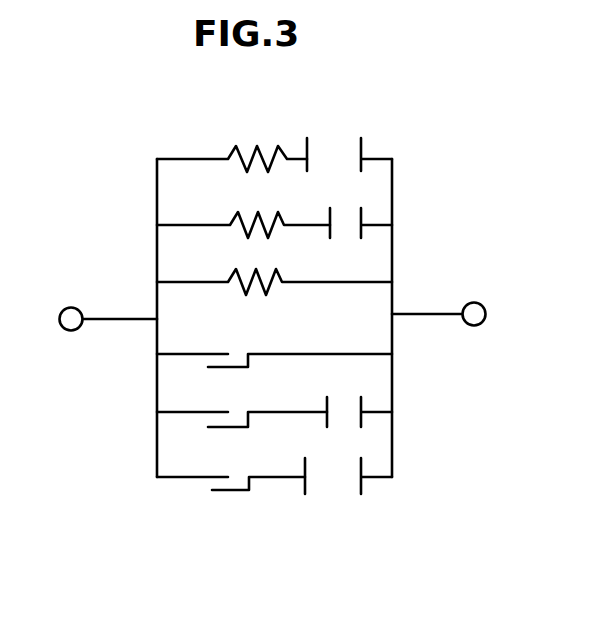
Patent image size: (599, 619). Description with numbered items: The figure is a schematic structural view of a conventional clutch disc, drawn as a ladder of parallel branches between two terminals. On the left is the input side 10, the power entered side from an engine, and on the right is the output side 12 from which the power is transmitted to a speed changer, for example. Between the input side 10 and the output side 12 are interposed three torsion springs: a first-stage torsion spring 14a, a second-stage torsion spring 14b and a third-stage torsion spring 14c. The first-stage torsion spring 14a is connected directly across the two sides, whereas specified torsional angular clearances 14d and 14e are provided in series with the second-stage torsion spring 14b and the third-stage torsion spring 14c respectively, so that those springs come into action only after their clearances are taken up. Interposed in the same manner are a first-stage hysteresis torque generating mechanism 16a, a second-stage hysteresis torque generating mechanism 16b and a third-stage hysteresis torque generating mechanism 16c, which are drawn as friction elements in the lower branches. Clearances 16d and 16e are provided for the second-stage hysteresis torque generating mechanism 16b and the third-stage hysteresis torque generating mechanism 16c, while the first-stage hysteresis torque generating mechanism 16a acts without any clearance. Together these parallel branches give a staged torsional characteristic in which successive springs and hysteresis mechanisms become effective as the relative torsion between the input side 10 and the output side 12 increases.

The input side 10 is at (105, 321).
The output side 12 is at (441, 312).
The first-stage torsion spring 14a is at (266, 290).
The second-stage torsion spring 14b is at (234, 221).
The third-stage torsion spring 14c is at (237, 151).
The torsional angular clearance 14d is at (343, 228).
The torsional angular clearance 14e is at (329, 150).
The first-stage hysteresis torque generating mechanism 16a is at (219, 351).
The second-stage hysteresis torque generating mechanism 16b is at (231, 428).
The third-stage hysteresis torque generating mechanism 16c is at (233, 492).
The clearance 16d is at (342, 410).
The clearance 16e is at (337, 481).